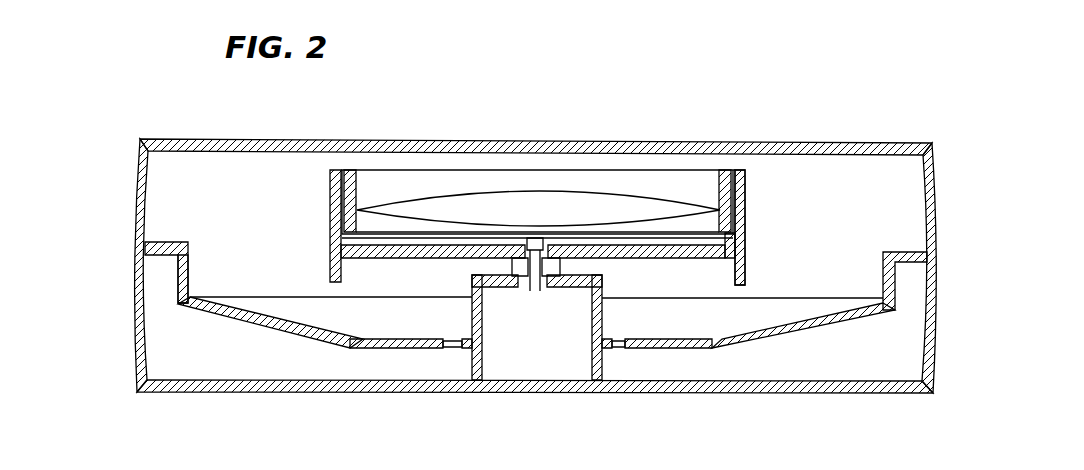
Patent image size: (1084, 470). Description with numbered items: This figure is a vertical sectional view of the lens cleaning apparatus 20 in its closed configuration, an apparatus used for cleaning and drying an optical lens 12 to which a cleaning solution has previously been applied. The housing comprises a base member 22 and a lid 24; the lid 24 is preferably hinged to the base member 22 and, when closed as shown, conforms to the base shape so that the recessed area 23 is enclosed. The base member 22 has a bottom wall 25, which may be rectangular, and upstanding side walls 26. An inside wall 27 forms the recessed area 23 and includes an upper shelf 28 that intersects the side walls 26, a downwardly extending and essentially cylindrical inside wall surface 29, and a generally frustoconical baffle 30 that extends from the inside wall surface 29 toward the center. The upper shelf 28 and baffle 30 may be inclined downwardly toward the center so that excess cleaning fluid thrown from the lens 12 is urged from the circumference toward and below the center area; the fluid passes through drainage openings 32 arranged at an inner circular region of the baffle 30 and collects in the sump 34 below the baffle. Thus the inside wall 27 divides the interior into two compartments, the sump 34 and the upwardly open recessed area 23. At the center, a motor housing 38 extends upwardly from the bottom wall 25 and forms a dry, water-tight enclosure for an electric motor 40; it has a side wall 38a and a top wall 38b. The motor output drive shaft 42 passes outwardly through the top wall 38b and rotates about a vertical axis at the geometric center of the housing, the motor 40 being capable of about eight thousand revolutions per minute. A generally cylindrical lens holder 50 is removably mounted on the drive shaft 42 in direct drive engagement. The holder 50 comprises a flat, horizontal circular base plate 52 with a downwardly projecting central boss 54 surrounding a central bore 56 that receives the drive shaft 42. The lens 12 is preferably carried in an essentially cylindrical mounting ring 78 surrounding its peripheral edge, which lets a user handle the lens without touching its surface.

The optical lens 12 is at (546, 225).
The lens cleaning apparatus 20 is at (515, 269).
The base member 22 is at (214, 396).
The recessed area 23 is at (270, 274).
The lid 24 is at (265, 138).
The bottom wall 25 is at (307, 393).
The side walls 26 is at (135, 363).
The inside wall 27 is at (198, 234).
The upper shelf 28 is at (158, 243).
The inside wall surface 29 is at (190, 276).
The baffle 30 is at (233, 318).
The drainage openings 32 is at (453, 338).
The sump 34 is at (305, 372).
The motor housing 38 is at (603, 326).
The side wall 38a is at (605, 307).
The top wall 38b is at (480, 278).
The electric motor 40 is at (558, 370).
The motor output drive shaft 42 is at (536, 292).
The lens holder 50 is at (747, 270).
The base plate 52 is at (418, 258).
The central boss 54 is at (515, 287).
The central bore 56 is at (545, 242).
The mounting ring 78 is at (747, 185).